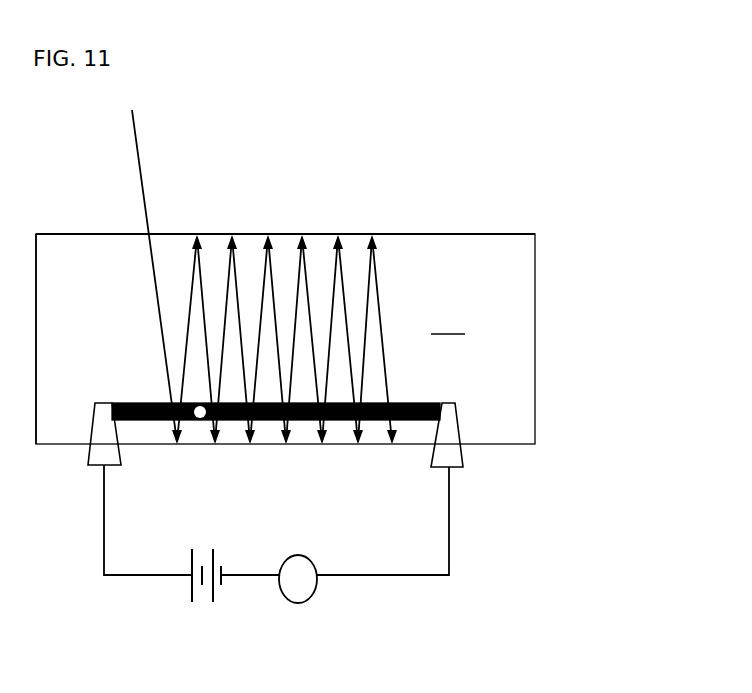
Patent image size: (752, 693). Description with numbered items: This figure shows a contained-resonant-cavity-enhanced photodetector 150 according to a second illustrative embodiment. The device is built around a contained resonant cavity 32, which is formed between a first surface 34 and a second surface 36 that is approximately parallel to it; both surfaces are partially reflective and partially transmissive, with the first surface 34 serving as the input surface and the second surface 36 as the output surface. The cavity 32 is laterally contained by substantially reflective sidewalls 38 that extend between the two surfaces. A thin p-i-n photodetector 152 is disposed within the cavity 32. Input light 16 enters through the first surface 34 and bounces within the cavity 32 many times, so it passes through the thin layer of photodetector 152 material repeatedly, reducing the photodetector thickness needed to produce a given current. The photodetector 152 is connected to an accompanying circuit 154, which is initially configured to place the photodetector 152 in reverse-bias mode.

The input light 16 is at (138, 151).
The contained-resonant-cavity-enhanced photodetector 150 is at (292, 288).
The first surface 34 is at (423, 235).
The sidewalls 38 is at (37, 306).
The contained resonant cavity 32 is at (285, 339).
The p-i-n photodetector 152 is at (120, 401).
The second surface 36 is at (513, 447).
The circuit 154 is at (459, 570).